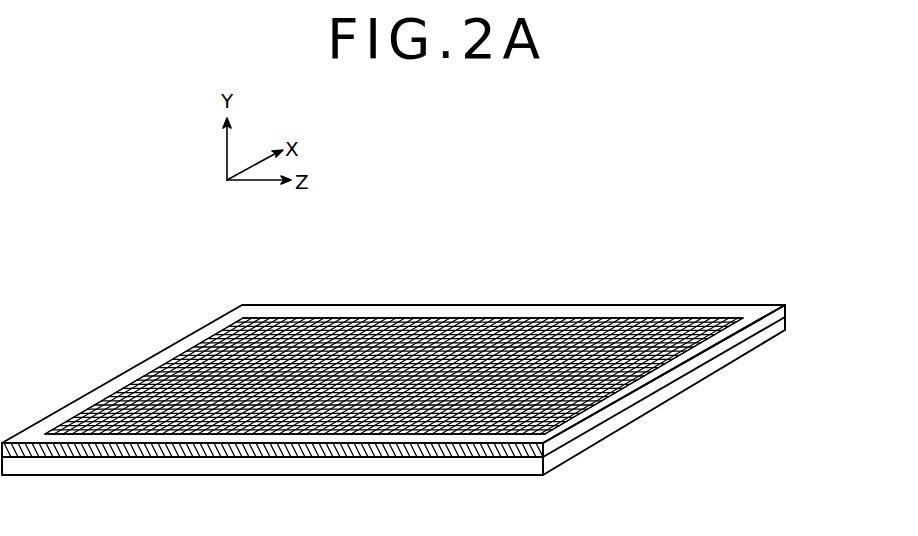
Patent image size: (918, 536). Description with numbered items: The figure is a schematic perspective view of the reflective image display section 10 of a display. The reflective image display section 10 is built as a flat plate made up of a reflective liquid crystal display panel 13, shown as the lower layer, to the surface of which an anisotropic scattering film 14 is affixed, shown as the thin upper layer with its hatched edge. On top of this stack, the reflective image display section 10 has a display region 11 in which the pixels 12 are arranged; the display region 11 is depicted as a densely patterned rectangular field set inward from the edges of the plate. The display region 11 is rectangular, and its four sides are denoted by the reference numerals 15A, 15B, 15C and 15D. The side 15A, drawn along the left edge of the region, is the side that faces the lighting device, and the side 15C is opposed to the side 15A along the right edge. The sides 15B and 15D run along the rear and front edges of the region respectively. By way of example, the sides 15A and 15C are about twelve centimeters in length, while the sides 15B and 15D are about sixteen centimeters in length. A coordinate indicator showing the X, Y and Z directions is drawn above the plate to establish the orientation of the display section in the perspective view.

The reflective image display section 10 is at (617, 186).
The display region 11 is at (452, 317).
The pixels 12 is at (325, 325).
The reflective liquid crystal display panel 13 is at (787, 332).
The anisotropic scattering film 14 is at (787, 307).
The side 15A is at (153, 370).
The side 15B is at (573, 325).
The side 15C is at (628, 385).
The side 15D is at (190, 435).